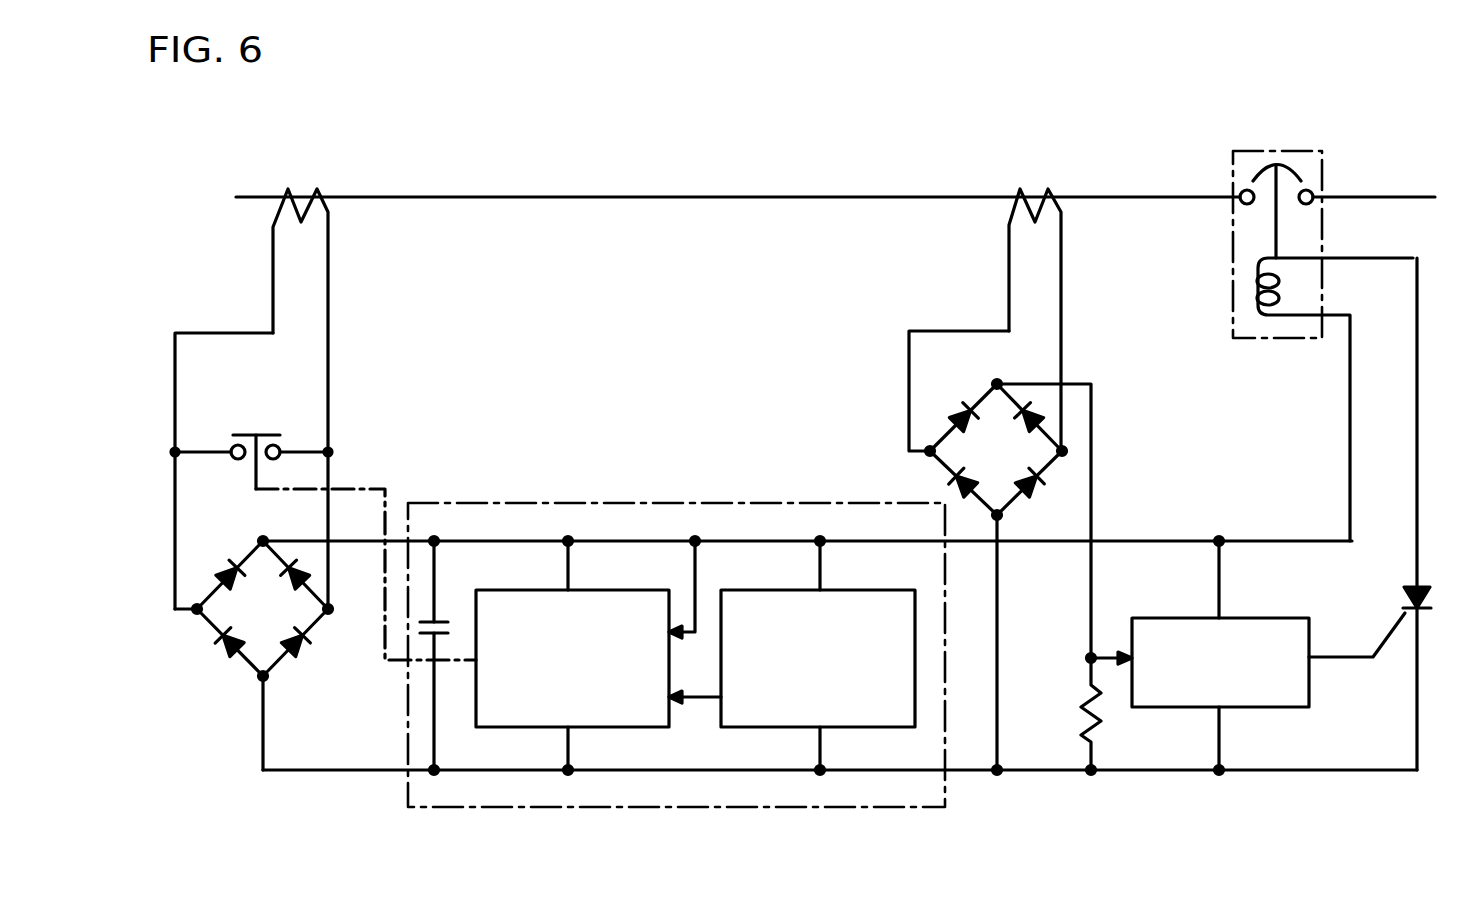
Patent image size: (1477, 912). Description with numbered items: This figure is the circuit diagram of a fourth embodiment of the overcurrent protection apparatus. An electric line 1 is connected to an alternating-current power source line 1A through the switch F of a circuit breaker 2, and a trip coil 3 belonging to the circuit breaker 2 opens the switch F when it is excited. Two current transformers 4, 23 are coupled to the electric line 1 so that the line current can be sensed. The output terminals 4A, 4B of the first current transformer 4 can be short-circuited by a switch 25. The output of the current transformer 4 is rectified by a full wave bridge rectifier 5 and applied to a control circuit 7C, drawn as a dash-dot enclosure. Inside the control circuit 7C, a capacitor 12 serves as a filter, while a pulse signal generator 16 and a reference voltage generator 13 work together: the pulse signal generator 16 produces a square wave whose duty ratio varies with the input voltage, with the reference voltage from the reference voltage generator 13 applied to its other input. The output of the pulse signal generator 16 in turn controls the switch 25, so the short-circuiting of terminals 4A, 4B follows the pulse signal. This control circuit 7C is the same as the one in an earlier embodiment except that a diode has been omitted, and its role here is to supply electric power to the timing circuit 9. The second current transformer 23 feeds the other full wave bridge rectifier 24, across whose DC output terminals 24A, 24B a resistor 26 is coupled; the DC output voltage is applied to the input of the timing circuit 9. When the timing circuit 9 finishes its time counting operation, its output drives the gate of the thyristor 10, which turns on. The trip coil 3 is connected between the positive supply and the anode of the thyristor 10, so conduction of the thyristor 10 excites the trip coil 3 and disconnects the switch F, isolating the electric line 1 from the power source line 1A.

The electric line 1 is at (777, 197).
The power source line 1A is at (1377, 197).
The circuit breaker 2 is at (1233, 178).
The switch F is at (1276, 160).
The trip coil 3 is at (1250, 282).
The current transformer 4 is at (329, 200).
The output terminal 4A is at (175, 452).
The output terminal 4B is at (330, 450).
The switch 25 is at (245, 465).
The full wave bridge rectifier 5 is at (260, 652).
The control circuit 7C is at (598, 810).
The capacitor 12 is at (447, 620).
The pulse signal generator 16 is at (606, 590).
The reference voltage generator 13 is at (806, 590).
The current transformer 23 is at (1061, 200).
The full wave bridge rectifier 24 is at (983, 453).
The DC output terminal 24A is at (997, 384).
The DC output terminal 24B is at (998, 516).
The resistor 26 is at (1083, 712).
The timing circuit 9 is at (1270, 707).
The thyristor 10 is at (1413, 587).